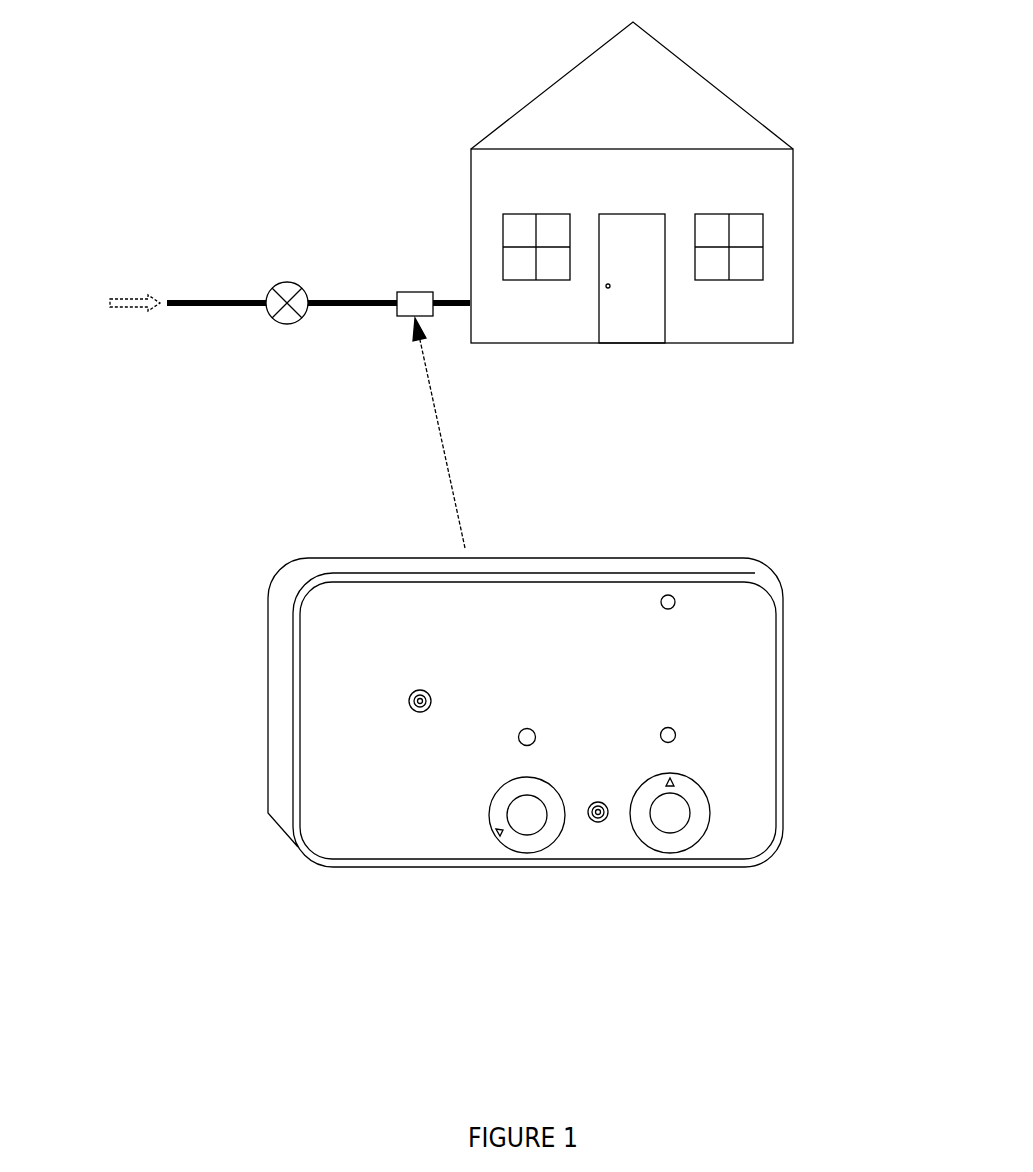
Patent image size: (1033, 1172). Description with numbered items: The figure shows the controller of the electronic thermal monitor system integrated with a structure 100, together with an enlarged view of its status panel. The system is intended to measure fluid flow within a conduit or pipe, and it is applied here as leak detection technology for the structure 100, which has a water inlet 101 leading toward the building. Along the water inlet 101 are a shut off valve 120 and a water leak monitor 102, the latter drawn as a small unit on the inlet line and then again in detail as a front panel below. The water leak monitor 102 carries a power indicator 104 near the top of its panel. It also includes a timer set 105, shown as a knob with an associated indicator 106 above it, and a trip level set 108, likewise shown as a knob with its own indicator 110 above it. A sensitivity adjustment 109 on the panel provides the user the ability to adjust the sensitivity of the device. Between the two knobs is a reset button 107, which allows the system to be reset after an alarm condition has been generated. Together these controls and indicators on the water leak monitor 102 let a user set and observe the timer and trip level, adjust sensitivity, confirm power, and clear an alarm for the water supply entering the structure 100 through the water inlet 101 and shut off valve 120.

The structure 100 is at (486, 194).
The water inlet 101 is at (175, 308).
The shut off valve 120 is at (268, 291).
The water leak monitor 102 is at (408, 298).
The power indicator 104 is at (672, 597).
The timer set 105 is at (707, 835).
The indicator 106 is at (742, 726).
The reset button 107 is at (612, 847).
The trip level set 108 is at (497, 843).
The sensitivity adjustment 109 is at (371, 680).
The indicator 110 is at (380, 733).